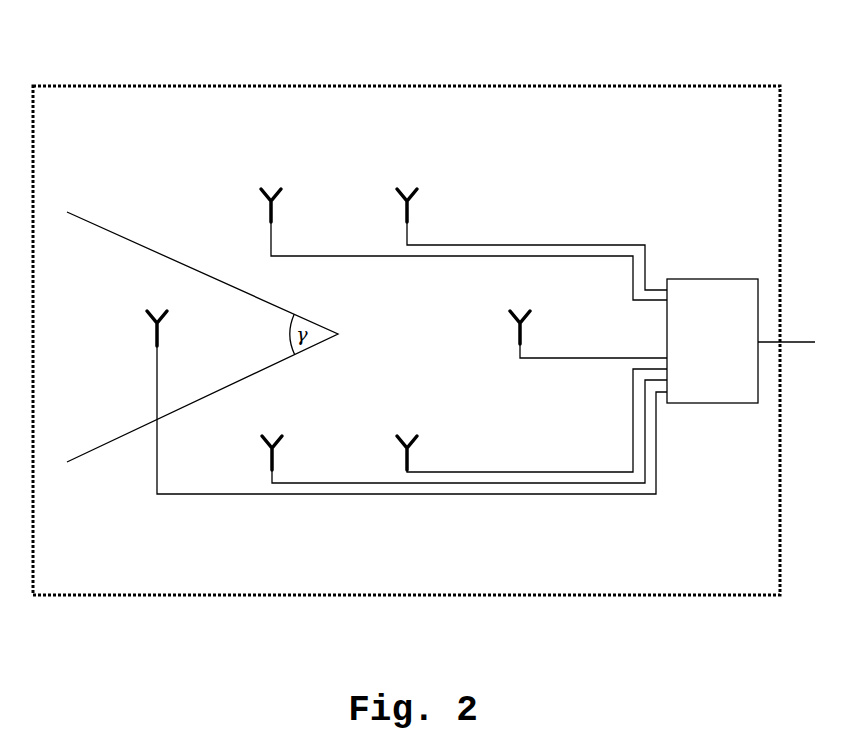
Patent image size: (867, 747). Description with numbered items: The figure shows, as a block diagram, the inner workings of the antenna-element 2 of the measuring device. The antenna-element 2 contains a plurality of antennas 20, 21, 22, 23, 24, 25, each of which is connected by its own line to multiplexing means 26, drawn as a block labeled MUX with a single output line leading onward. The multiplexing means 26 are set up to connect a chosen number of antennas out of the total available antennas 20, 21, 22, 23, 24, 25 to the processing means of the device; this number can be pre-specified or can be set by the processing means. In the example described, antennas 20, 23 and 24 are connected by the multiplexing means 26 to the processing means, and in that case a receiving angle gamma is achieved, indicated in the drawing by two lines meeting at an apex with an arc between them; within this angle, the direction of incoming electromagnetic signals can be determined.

The antenna-element 2 is at (88, 86).
The antenna 20 is at (261, 189).
The antenna 21 is at (397, 189).
The antenna 22 is at (530, 311).
The antenna 23 is at (148, 314).
The antenna 24 is at (263, 439).
The antenna 25 is at (398, 439).
The multiplexing means 26 is at (758, 298).